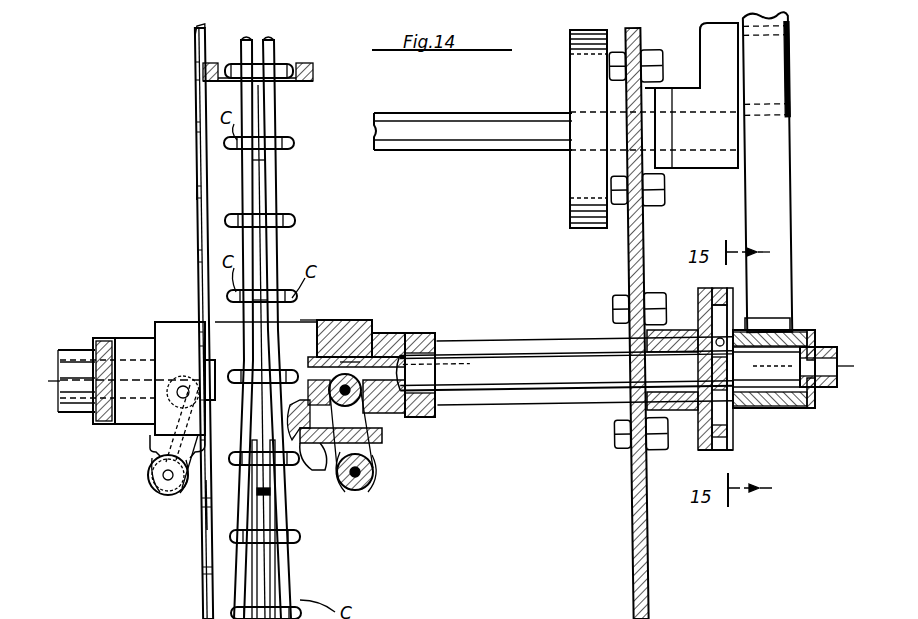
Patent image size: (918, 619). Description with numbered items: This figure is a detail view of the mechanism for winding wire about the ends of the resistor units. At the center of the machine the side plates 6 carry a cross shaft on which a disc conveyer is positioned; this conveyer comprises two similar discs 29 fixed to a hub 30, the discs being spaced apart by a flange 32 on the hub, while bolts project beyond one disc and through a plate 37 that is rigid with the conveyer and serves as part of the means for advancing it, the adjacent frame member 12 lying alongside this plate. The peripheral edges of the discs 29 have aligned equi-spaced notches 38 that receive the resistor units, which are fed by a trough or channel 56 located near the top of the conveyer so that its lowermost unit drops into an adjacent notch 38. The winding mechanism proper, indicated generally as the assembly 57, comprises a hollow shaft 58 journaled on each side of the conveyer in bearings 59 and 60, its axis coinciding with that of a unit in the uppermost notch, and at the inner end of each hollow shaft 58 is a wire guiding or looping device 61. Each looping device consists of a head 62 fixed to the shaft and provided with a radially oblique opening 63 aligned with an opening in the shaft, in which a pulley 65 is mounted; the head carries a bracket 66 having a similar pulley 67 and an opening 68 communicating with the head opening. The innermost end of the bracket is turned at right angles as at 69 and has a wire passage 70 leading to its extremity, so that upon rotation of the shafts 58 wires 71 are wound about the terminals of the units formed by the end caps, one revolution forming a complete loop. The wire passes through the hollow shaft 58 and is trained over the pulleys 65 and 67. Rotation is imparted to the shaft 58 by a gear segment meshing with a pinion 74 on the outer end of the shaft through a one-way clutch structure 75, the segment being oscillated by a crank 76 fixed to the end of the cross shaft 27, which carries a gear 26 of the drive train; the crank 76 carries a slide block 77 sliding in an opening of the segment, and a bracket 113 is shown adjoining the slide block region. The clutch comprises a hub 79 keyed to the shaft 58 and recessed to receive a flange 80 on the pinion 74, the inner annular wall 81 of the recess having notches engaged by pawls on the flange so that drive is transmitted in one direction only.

The side plate 6 is at (633, 520).
The frame bar 12 is at (197, 190).
The gear 26 is at (569, 202).
The cross shaft 27 is at (444, 134).
The discs 29 is at (258, 597).
The hub 30 is at (300, 318).
The flange 32 is at (260, 262).
The plate 37 is at (197, 108).
The notches 38 is at (272, 140).
The trough or channel 56 is at (285, 65).
The assembly 57 is at (450, 458).
The hollow shaft 58 is at (510, 368).
The bearing 59 is at (675, 330).
The bearing 60 is at (104, 340).
The wire guiding or looping device 61 is at (175, 322).
The head 62 is at (184, 385).
The radially oblique opening 63 is at (372, 408).
The pulley 65 is at (345, 362).
The bracket 66 is at (380, 440).
The pulley 67 is at (160, 495).
The opening 68 is at (372, 466).
The angularly directed end 69 is at (222, 505).
The wire passage 70 is at (318, 458).
The wire 71 is at (196, 470).
The pinion 74 is at (788, 410).
The one-way clutch structure 75 is at (695, 440).
The crank 76 is at (712, 52).
The slide block 77 is at (795, 74).
The hub 79 is at (724, 296).
The flange 80 is at (726, 325).
The inner annular wall 81 is at (736, 330).
The bracket 113 is at (780, 318).